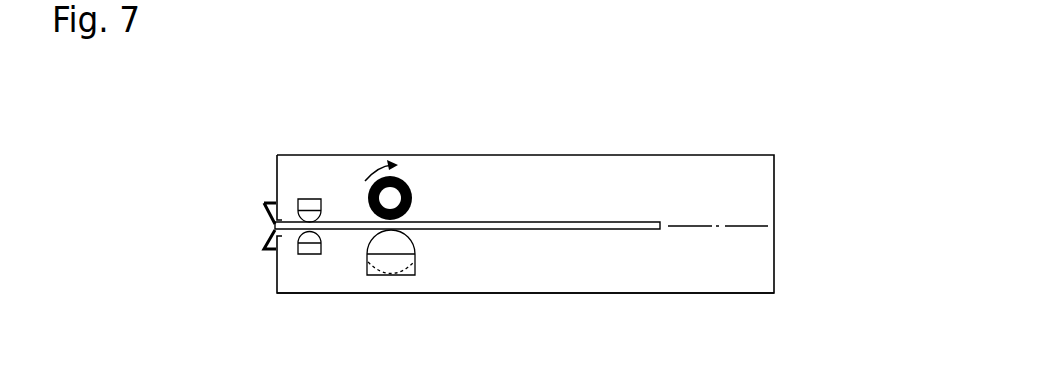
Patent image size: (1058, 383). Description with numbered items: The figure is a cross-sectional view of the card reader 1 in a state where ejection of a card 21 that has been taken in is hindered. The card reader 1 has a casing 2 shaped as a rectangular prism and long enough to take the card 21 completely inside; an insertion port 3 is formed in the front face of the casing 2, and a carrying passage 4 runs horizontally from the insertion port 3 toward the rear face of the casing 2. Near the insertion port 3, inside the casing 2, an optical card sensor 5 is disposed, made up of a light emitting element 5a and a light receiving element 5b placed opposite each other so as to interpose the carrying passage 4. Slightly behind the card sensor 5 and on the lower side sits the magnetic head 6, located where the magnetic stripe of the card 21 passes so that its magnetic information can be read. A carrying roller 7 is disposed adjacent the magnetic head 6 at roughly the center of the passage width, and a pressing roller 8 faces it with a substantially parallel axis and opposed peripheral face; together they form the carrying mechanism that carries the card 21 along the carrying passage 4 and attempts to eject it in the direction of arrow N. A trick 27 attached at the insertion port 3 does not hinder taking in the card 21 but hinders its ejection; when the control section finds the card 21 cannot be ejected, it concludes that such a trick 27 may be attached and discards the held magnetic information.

The card reader 1 is at (728, 128).
The casing 2 is at (727, 294).
The insertion port 3 is at (270, 233).
The carrying passage 4 is at (747, 224).
The card sensor 5 is at (298, 238).
The light emitting element 5a is at (308, 198).
The light receiving element 5b is at (312, 252).
The magnetic head 6 is at (368, 277).
The carrying roller 7 is at (412, 197).
The pressing roller 8 is at (413, 276).
The card 21 is at (536, 225).
The trick 27 is at (263, 212).